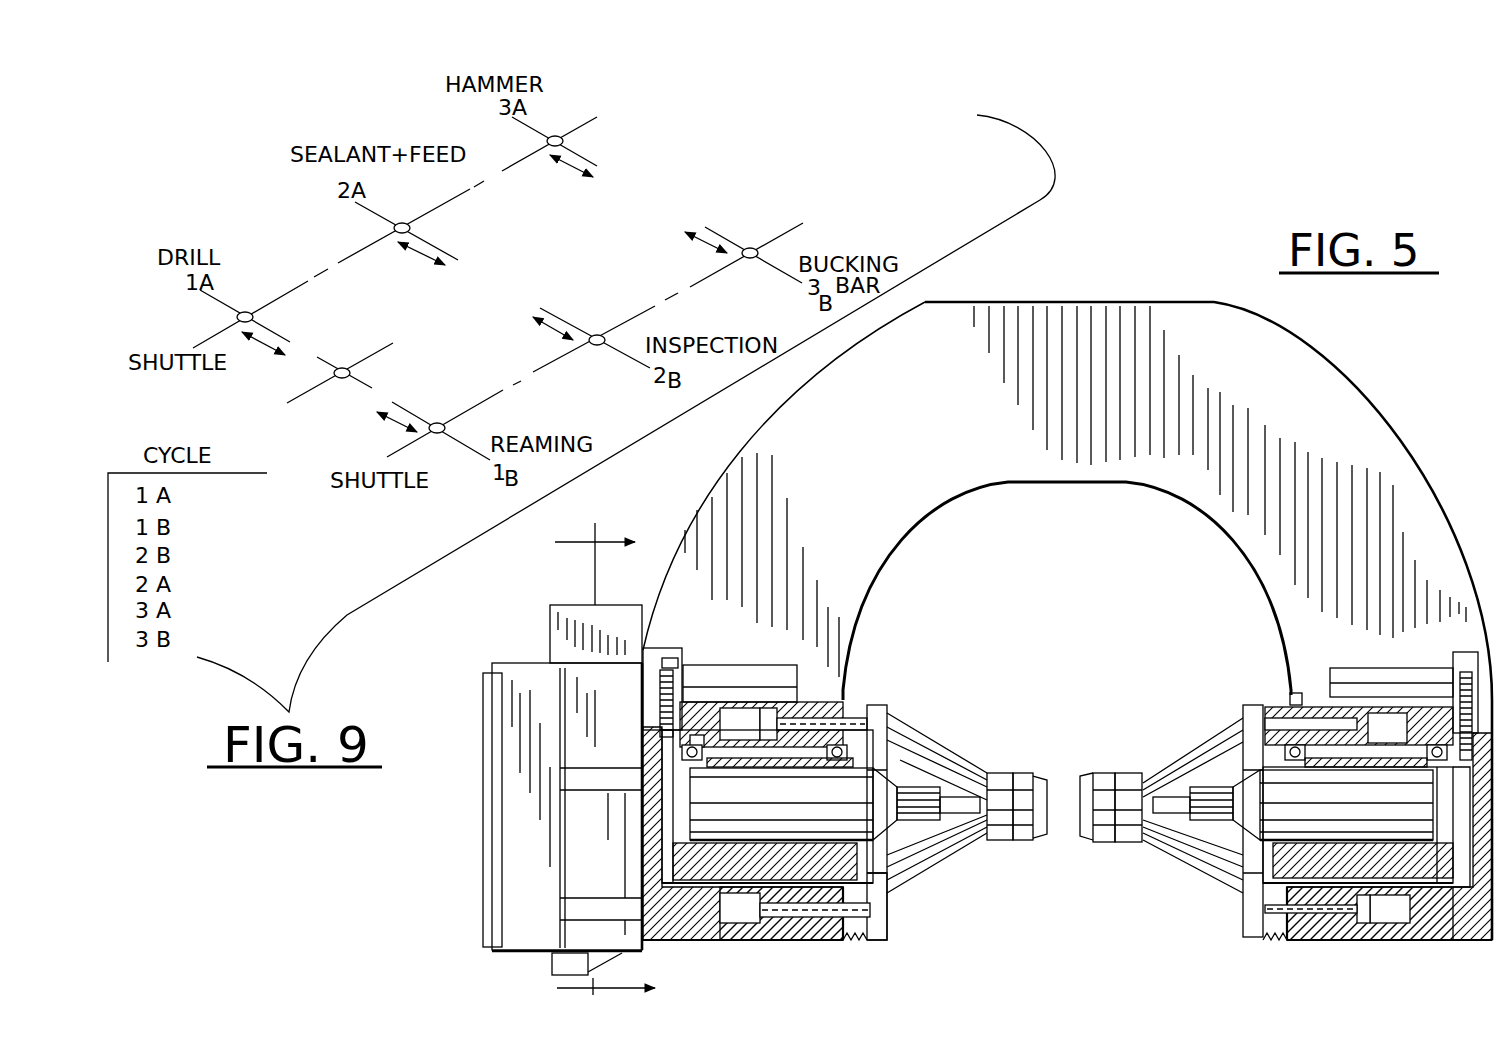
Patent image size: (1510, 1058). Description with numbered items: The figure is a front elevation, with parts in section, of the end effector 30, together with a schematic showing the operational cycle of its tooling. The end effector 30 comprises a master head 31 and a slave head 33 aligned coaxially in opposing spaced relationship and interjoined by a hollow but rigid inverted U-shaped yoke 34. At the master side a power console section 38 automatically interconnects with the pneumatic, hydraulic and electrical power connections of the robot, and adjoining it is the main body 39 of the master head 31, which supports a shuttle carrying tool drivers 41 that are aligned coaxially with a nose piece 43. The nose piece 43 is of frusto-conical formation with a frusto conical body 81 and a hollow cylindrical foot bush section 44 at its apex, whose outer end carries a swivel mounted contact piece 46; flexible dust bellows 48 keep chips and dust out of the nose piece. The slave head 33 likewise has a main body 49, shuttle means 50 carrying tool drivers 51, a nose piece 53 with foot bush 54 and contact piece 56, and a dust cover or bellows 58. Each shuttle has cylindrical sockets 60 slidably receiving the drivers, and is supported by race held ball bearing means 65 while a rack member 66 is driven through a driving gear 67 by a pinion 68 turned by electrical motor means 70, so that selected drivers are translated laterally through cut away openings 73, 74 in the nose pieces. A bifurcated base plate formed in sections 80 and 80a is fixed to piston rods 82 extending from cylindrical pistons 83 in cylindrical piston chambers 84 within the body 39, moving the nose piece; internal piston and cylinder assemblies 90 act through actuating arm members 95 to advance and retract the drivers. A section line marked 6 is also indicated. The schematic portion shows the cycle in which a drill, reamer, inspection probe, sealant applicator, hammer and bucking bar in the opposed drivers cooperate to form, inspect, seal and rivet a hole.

The end effector 30 is at (1318, 346).
The inverted U-shaped yoke 34 is at (1368, 393).
The power console section 38 is at (546, 660).
The main body 39 is at (658, 946).
The tool drivers 41 is at (797, 793).
The nose piece 43 is at (907, 720).
The foot bush section 44 is at (1002, 840).
The contact piece 46 is at (1048, 777).
The flexible dust bellows 48 is at (855, 940).
The main body 49 is at (1295, 938).
The shuttle means 50 is at (1462, 890).
The tool drivers 51 is at (1337, 800).
The nose piece 53 is at (1193, 740).
The foot bush 54 is at (1117, 842).
The contact piece 56 is at (1082, 773).
The dust cover or bellows 58 is at (1270, 940).
The cylindrical sockets 60 is at (670, 833).
The race held ball bearing means 65 is at (683, 767).
The rack member 66 is at (652, 727).
The driving gear 67 is at (663, 702).
The pinion 68 is at (663, 677).
The electrical motor means 70 is at (686, 668).
The cut away openings 73 is at (917, 813).
The cut away openings 74 is at (1197, 813).
The base plate 80 is at (877, 708).
The base plate section 80a is at (883, 930).
The frusto conical body 81 is at (920, 755).
The piston rods 82 is at (813, 718).
The cylindrical pistons 83 is at (750, 707).
The cylindrical piston chambers 84 is at (1388, 975).
The piston and cylinder assemblies 90 is at (707, 860).
The actuating arm member 95 is at (883, 907).
The master head 31 is at (897, 938).
The slave head 33 is at (1233, 927).
The section line 6 is at (605, 759).